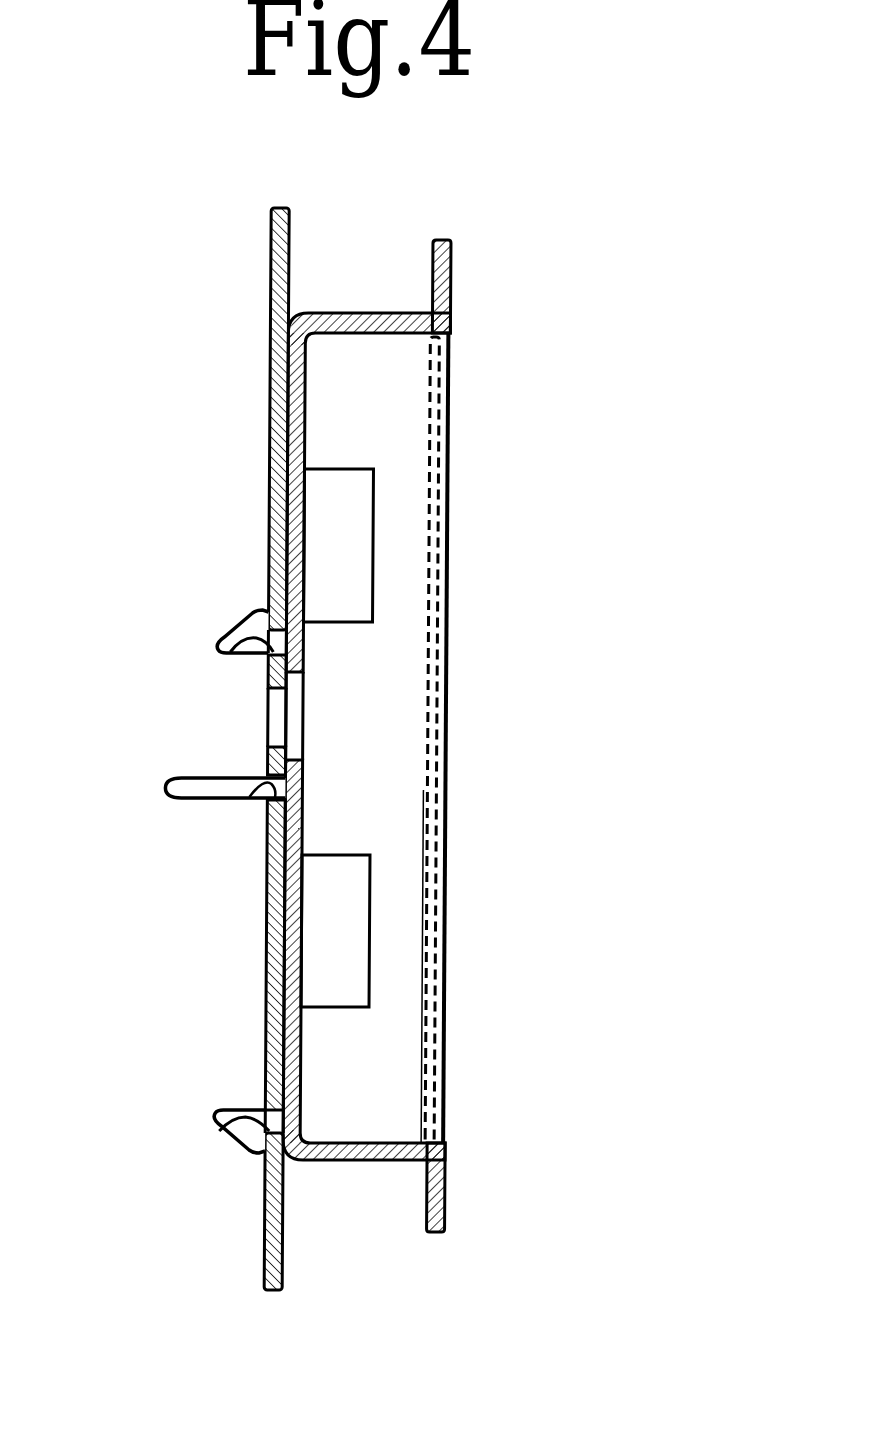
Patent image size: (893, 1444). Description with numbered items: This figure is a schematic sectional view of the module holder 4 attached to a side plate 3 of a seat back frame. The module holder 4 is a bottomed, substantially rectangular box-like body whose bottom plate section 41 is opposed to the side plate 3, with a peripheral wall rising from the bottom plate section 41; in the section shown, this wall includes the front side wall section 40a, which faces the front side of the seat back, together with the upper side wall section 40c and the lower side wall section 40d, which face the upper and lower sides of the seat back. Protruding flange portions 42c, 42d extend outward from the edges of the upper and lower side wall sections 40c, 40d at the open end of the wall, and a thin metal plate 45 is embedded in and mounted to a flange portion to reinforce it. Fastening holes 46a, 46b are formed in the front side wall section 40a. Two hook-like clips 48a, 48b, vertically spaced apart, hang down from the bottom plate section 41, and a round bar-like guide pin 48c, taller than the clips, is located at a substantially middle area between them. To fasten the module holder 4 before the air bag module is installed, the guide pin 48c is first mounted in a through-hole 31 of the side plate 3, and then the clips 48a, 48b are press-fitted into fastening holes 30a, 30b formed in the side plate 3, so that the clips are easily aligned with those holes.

The side plate 3 is at (169, 749).
The module holder 4 is at (462, 765).
The fastening hole 30a is at (228, 652).
The fastening hole 30b is at (227, 1130).
The through-hole 31 is at (250, 797).
The front side wall section 40a is at (400, 667).
The upper side wall section 40c is at (360, 313).
The lower side wall section 40d is at (355, 1160).
The bottom plate section 41 is at (302, 850).
The protruding flange portion 42c is at (450, 278).
The protruding flange portion 42d is at (448, 1180).
The thin metal plate 45 is at (452, 850).
The fastening hole 46a is at (372, 584).
The fastening hole 46b is at (370, 950).
The hook-like clip 48a is at (238, 630).
The hook-like clip 48b is at (232, 1108).
The guide pin 48c is at (227, 777).